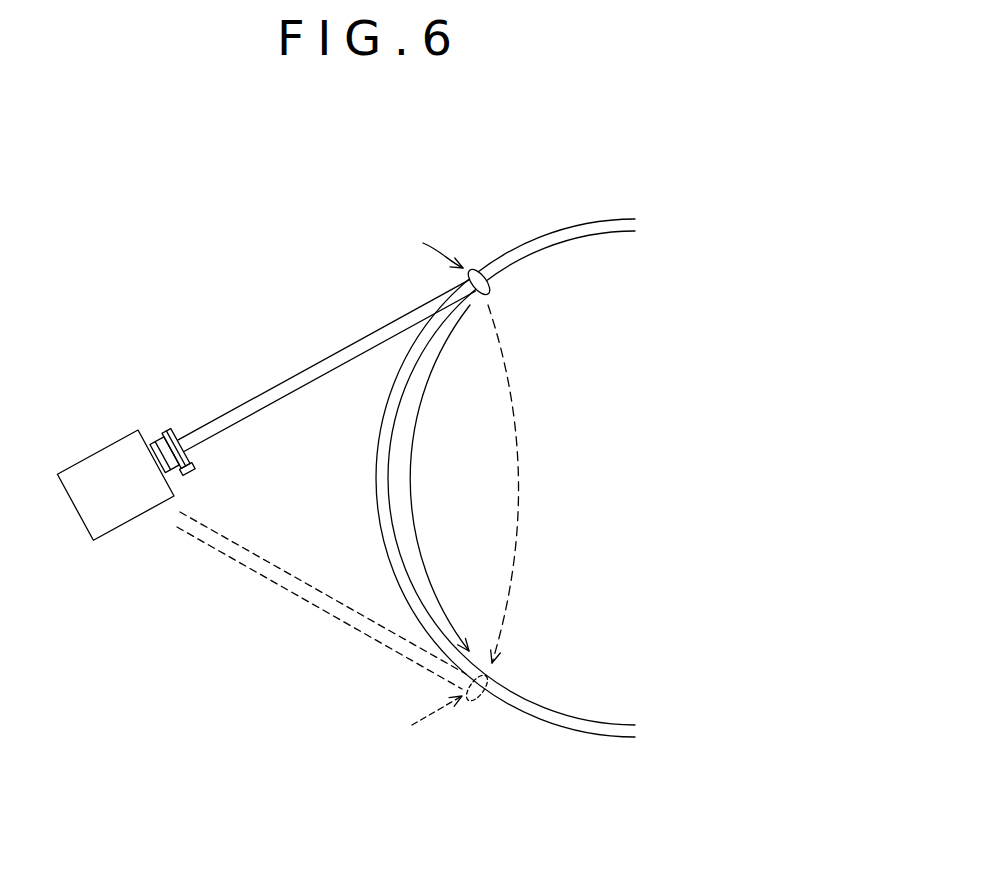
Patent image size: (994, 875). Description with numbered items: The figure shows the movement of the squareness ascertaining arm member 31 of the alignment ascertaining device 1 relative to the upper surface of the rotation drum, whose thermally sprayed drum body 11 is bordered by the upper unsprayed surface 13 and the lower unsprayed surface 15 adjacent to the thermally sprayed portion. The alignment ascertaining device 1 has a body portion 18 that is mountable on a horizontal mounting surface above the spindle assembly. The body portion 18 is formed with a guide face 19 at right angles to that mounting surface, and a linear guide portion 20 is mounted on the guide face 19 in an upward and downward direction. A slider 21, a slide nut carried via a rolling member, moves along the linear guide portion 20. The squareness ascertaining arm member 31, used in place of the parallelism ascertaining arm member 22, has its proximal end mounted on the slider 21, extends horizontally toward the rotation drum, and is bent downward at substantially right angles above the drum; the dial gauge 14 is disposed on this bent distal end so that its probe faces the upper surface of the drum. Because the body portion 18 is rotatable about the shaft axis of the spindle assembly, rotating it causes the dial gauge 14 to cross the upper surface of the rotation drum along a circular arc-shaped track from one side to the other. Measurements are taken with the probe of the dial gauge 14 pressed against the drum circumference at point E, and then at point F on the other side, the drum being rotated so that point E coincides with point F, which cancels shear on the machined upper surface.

The alignment ascertaining device 1 is at (379, 185).
The guide rail (arc-shaped rail) 11 is at (580, 257).
The upper unsprayed surface 13 is at (505, 478).
The lower unsprayed surface 15 is at (505, 478).
The dial gauge 14 is at (475, 265).
The body portion 18 is at (98, 470).
The guide face 19 is at (150, 436).
The linear guide portion 20 is at (168, 440).
The slider 21 is at (186, 473).
The arm member 22 is at (326, 365).
The squareness ascertaining arm member 31 is at (268, 392).